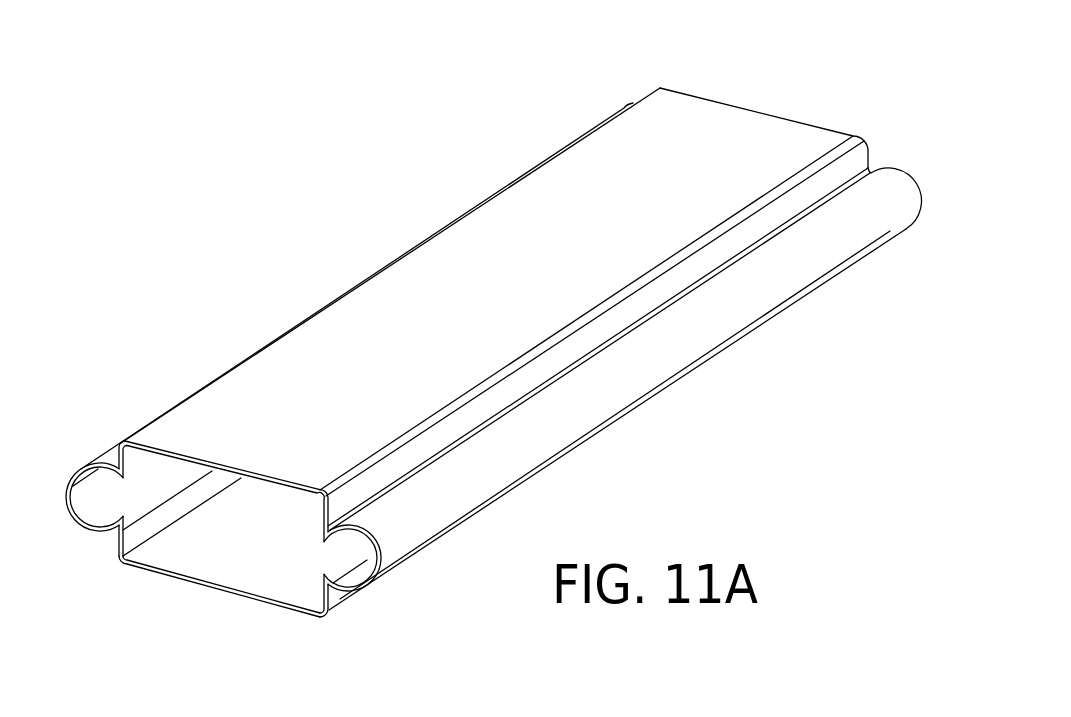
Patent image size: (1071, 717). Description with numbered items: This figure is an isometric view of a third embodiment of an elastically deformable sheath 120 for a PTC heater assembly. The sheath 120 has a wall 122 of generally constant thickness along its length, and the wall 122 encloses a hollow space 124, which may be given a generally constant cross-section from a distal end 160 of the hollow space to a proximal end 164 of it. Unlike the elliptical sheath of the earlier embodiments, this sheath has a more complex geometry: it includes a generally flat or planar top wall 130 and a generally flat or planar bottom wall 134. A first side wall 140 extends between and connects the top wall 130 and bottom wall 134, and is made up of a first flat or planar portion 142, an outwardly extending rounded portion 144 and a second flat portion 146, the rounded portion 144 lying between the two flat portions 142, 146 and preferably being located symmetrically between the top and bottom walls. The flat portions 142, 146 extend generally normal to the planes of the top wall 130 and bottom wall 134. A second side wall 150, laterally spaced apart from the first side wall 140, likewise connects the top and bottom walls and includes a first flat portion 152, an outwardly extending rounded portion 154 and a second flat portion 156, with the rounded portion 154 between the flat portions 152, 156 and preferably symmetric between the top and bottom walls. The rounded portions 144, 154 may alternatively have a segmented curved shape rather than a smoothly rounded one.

The sheath 120 is at (551, 110).
The wall 122 is at (690, 113).
The hollow space 124 is at (290, 571).
The top wall 130 is at (379, 318).
The bottom wall 134 is at (183, 579).
The first side wall 140 is at (909, 175).
The first flat portion 142 is at (627, 312).
The outwardly extending rounded portion 144 is at (768, 300).
The second flat portion 146 is at (343, 597).
The second side wall 150 is at (424, 222).
The first flat portion 152 is at (116, 458).
The outwardly extending rounded portion 154 is at (67, 467).
The second flat portion 156 is at (113, 547).
The distal end 160 is at (778, 115).
The proximal end 164 is at (233, 465).